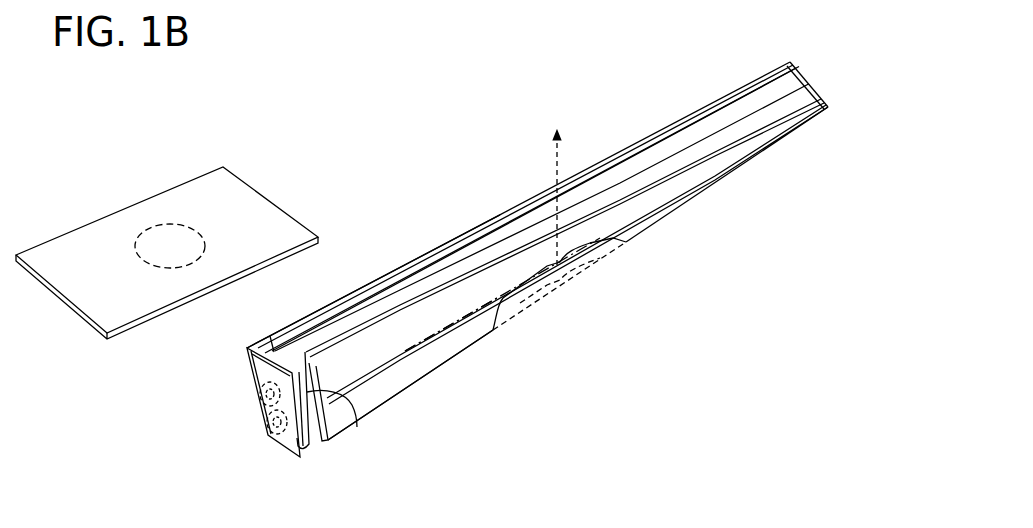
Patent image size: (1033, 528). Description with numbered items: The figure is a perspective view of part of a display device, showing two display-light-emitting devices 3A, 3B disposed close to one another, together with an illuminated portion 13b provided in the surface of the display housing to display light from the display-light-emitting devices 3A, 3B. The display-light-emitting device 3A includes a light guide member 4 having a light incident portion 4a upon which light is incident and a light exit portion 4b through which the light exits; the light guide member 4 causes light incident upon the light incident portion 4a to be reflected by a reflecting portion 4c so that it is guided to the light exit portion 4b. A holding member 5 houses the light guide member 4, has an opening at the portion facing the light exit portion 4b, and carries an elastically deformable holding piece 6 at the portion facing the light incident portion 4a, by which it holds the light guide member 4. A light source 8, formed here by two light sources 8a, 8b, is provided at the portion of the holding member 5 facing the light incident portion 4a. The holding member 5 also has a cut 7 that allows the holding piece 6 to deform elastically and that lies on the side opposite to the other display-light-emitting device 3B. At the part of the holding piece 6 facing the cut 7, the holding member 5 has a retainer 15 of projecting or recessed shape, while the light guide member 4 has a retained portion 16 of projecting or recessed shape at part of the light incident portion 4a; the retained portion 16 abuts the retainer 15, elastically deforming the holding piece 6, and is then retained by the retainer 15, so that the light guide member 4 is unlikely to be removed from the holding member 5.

The display-light-emitting device 3A is at (490, 289).
The display-light-emitting device 3B is at (258, 172).
The light guide member 4 is at (528, 205).
The light incident portion 4a is at (283, 328).
The light exit portion 4b is at (480, 245).
The reflecting portion 4c is at (587, 262).
The holding member 5 is at (407, 382).
The holding piece 6 is at (297, 447).
The cut 7 is at (320, 460).
The light source 8 is at (220, 414).
The light source 8a is at (259, 391).
The light source 8b is at (265, 425).
The illuminated portion 13b is at (155, 226).
The retainer 15 is at (298, 368).
The retained portion 16 is at (357, 424).